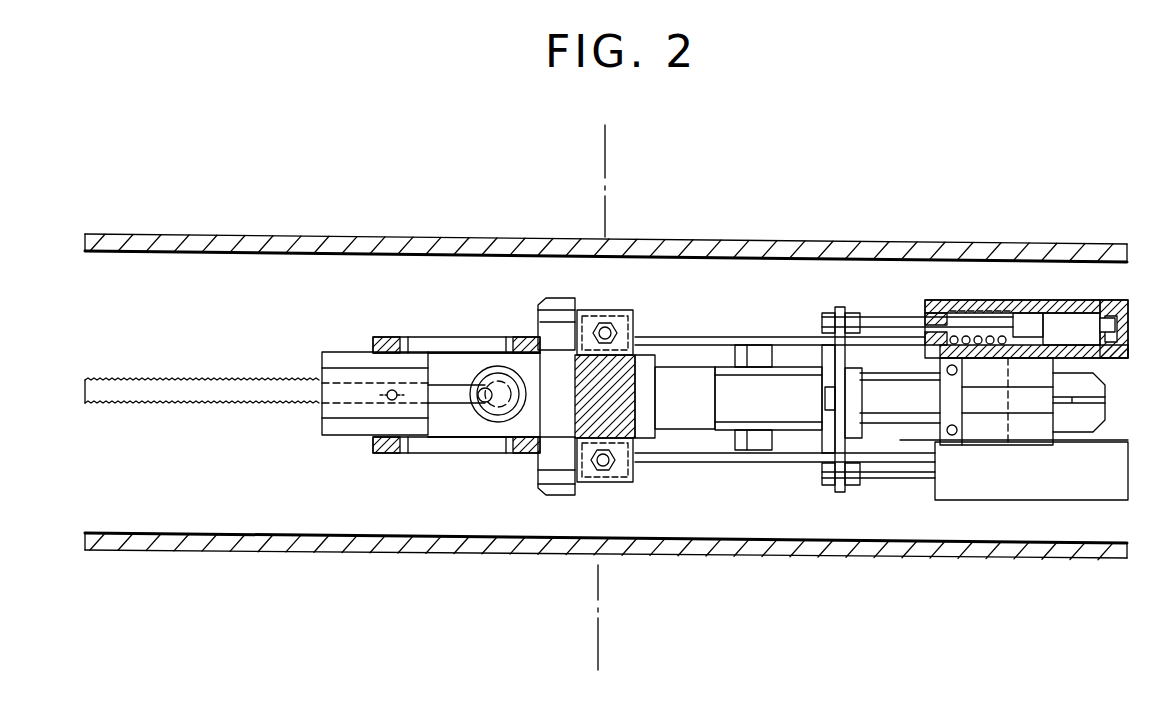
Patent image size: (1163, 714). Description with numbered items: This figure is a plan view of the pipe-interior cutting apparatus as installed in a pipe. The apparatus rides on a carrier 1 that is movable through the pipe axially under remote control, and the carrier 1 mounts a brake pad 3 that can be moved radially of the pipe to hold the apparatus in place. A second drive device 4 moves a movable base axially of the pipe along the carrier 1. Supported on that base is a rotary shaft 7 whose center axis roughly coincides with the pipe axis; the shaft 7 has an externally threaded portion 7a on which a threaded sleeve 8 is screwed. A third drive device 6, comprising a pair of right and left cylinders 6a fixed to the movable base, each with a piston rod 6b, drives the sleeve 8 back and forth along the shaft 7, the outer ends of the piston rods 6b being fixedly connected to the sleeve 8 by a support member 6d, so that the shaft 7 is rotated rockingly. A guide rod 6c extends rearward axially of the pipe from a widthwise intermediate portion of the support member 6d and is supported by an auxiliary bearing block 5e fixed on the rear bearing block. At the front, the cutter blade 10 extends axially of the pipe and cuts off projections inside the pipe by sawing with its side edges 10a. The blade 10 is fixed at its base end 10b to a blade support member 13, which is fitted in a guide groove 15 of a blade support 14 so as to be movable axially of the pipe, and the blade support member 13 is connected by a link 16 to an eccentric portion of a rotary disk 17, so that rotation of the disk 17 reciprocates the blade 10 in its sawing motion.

The carrier 1 is at (740, 462).
The brake pad 3 is at (625, 405).
The second drive device 4 is at (599, 397).
The auxiliary bearing block 5e is at (963, 410).
The third drive device 6 is at (1063, 300).
The cylinders 6a is at (1092, 482).
The piston rod 6b is at (908, 318).
The guide rod 6c is at (875, 402).
The support member 6d is at (802, 345).
The rotary shaft 7 is at (790, 400).
The externally threaded portion 7a is at (728, 366).
The threaded sleeve 8 is at (860, 370).
The cutter blade 10 is at (130, 404).
The side edges 10a is at (236, 404).
The base end 10b is at (340, 352).
The blade support member 13 is at (372, 385).
The blade support 14 is at (500, 338).
The guide groove 15 is at (410, 338).
The link 16 is at (462, 398).
The rotary disk 17 is at (503, 424).